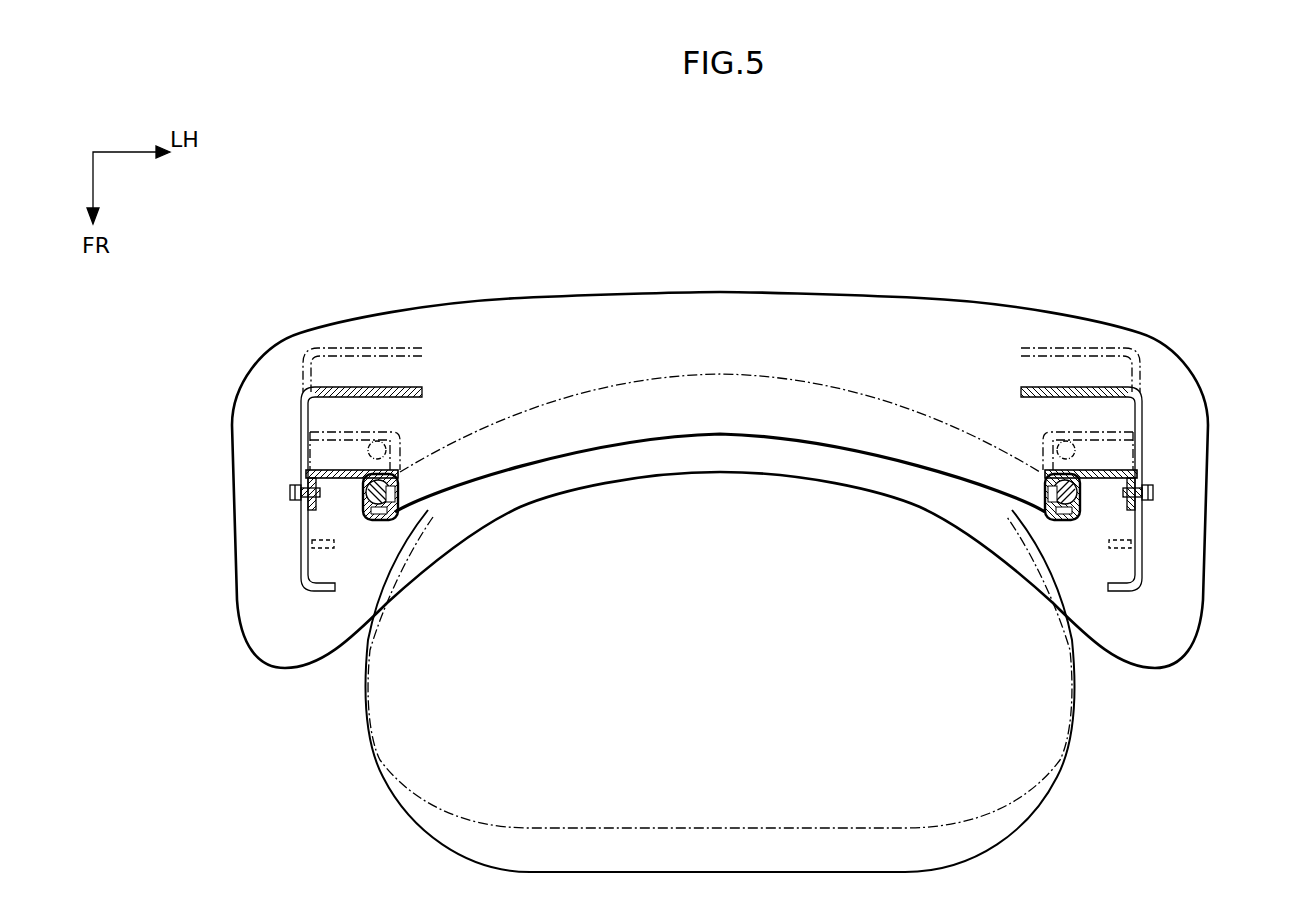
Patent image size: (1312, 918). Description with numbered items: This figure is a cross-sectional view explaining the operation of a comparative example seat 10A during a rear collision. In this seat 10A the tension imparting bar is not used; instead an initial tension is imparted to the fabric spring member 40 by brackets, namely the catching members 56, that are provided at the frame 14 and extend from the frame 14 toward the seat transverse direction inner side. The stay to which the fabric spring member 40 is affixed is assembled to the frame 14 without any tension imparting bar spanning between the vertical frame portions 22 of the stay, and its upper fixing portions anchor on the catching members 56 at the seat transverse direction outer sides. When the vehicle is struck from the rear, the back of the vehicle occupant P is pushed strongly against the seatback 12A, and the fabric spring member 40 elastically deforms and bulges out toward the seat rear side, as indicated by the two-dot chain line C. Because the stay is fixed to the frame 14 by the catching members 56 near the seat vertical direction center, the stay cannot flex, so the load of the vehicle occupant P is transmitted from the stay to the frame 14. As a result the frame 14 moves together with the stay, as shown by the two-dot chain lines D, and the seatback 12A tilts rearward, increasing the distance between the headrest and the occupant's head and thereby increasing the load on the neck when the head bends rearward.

The seat 10A is at (893, 252).
The seatback 12A is at (780, 294).
The frame 14 is at (300, 448).
The vertical frame portion 22 is at (368, 520).
The fabric spring member 40 is at (433, 490).
The catching member 56 is at (330, 478).
The two-dot chain line C is at (662, 376).
The two-dot chain lines D is at (378, 349).
The vehicle occupant P is at (420, 843).